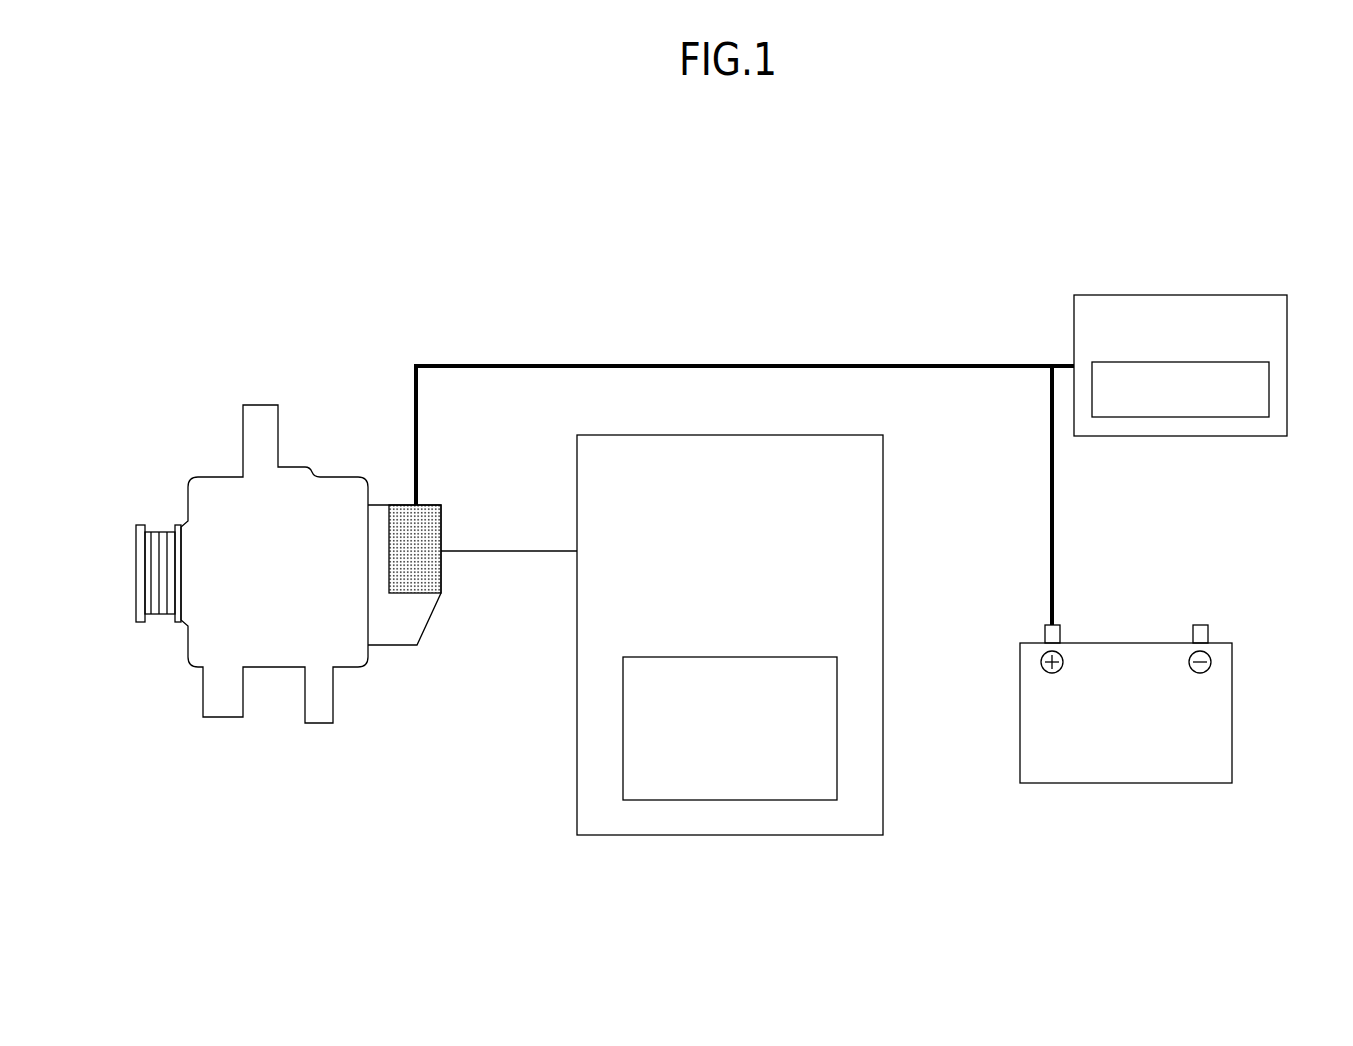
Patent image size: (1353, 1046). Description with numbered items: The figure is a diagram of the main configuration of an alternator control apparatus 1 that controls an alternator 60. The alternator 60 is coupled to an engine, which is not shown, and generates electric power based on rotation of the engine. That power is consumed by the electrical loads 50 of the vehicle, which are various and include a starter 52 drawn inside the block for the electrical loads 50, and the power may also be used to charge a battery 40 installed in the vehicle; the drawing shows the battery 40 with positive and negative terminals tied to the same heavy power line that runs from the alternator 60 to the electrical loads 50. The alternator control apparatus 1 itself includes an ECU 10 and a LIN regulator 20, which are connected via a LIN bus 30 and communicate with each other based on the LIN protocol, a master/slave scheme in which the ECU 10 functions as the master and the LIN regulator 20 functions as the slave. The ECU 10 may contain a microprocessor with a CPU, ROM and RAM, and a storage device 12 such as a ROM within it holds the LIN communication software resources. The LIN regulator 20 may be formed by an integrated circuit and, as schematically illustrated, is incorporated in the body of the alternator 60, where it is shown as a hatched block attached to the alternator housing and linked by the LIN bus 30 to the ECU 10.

The alternator control apparatus 1 is at (561, 228).
The ECU 10 is at (792, 435).
The storage device 12 is at (792, 657).
The LIN regulator 20 is at (423, 503).
The LIN bus 30 is at (477, 551).
The battery 40 is at (1232, 710).
The electrical loads 50 is at (1243, 295).
The starter 52 is at (1269, 387).
The alternator 60 is at (300, 467).